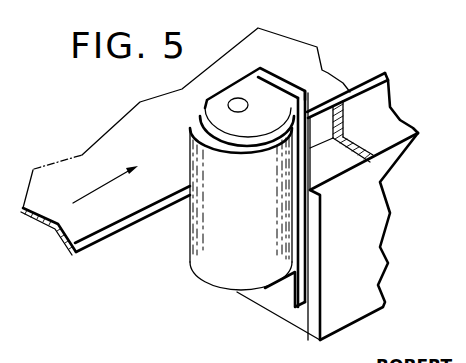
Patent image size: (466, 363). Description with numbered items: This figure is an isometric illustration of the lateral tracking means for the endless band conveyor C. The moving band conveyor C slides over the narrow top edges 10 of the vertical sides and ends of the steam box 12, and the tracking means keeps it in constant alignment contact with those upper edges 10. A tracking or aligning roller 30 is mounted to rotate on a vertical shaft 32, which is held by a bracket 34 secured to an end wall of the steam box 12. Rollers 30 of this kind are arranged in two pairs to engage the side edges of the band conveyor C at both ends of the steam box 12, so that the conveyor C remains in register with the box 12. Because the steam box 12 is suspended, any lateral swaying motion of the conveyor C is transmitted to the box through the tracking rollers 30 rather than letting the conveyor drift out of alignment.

The top edges 10 is at (374, 73).
The steam box 12 is at (358, 284).
The tracking roller 30 is at (225, 243).
The vertical shaft 32 is at (230, 107).
The bracket 34 is at (226, 99).
The band conveyor C is at (85, 235).